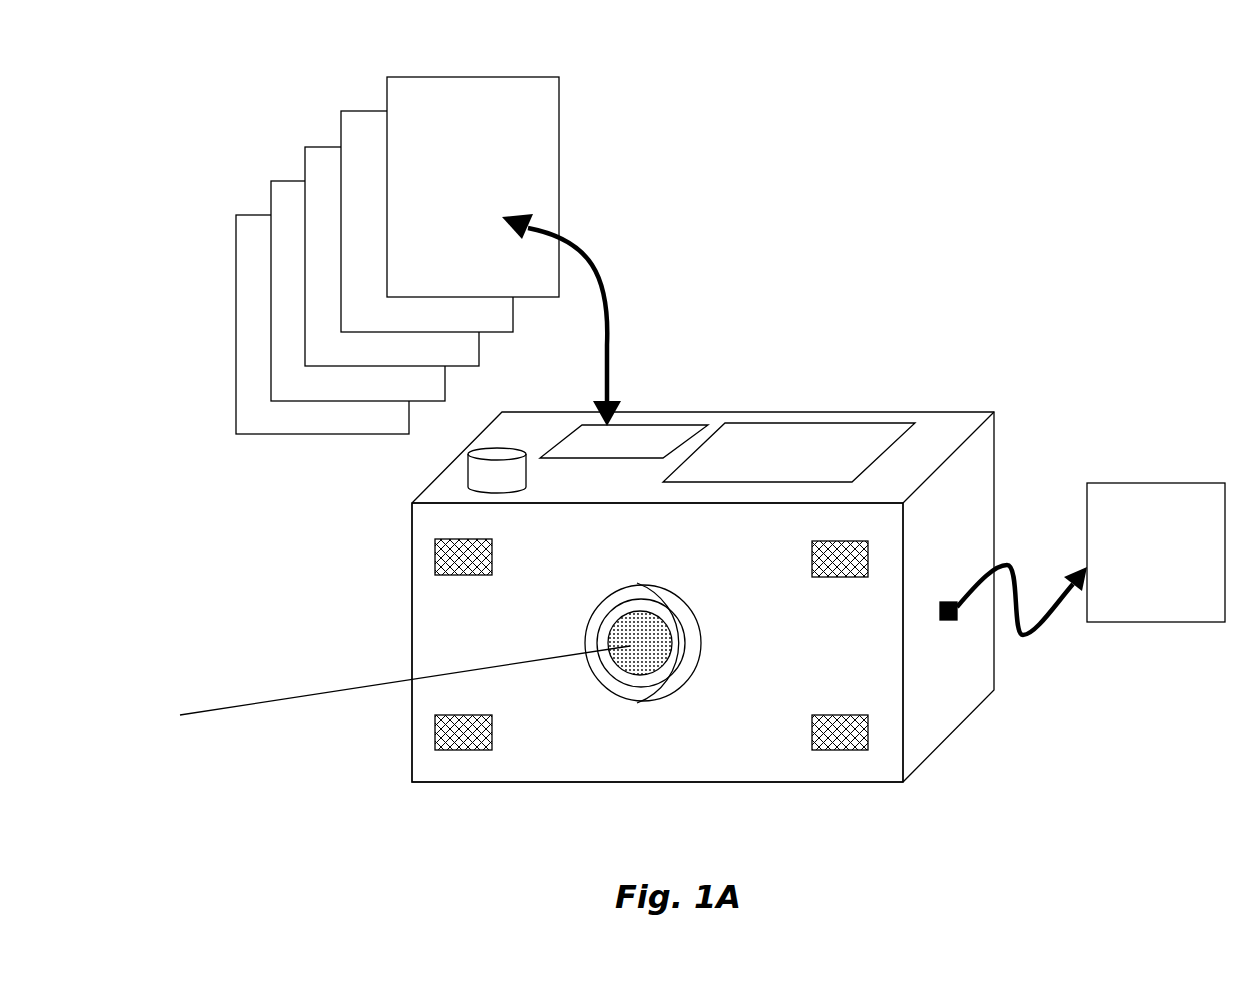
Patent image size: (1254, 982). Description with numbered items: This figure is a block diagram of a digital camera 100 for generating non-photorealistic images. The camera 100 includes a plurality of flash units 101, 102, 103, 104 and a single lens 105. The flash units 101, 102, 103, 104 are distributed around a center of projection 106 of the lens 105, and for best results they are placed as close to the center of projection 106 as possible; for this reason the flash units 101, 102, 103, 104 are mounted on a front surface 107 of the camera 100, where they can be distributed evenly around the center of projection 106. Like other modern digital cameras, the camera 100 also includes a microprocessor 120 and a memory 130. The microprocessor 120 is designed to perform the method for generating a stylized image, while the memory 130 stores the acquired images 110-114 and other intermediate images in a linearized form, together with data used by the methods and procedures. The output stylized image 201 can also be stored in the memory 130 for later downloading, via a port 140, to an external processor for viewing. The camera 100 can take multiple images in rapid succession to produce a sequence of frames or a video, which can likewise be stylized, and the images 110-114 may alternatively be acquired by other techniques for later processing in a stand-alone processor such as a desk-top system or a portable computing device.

The digital camera 100 is at (935, 412).
The flash unit 101 is at (434, 551).
The flash unit 102 is at (812, 552).
The flash unit 103 is at (434, 730).
The flash unit 104 is at (812, 737).
The lens 105 is at (585, 633).
The center of projection 106 is at (332, 690).
The front surface 107 is at (548, 738).
The acquired images 110-114 is at (418, 75).
The microprocessor 120 is at (793, 423).
The memory 130 is at (633, 425).
The port 140 is at (942, 622).
The stylized image 201 is at (1132, 622).